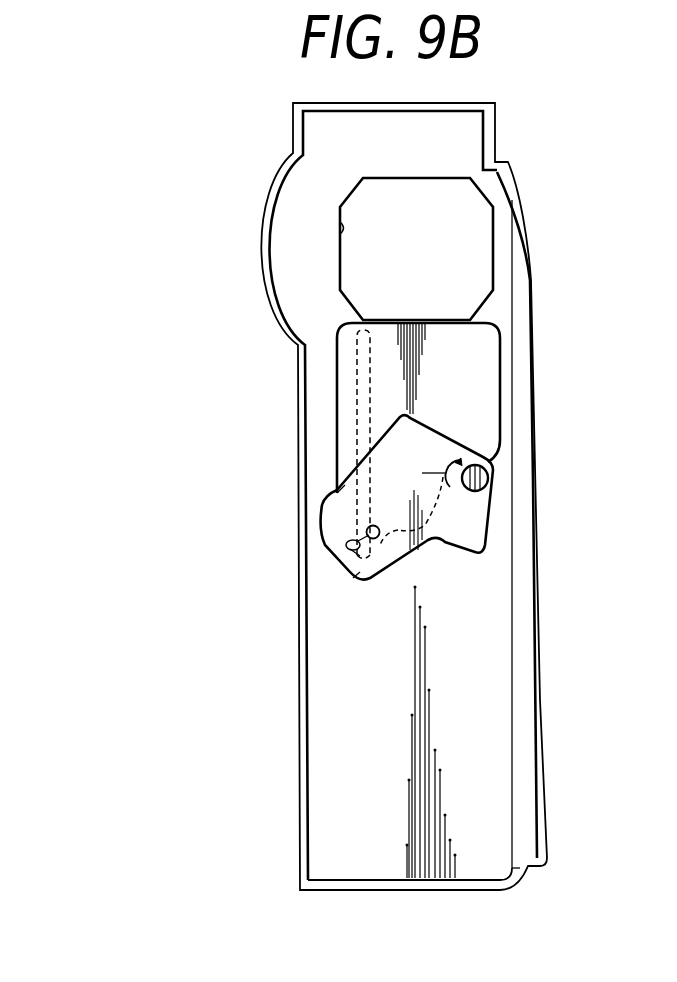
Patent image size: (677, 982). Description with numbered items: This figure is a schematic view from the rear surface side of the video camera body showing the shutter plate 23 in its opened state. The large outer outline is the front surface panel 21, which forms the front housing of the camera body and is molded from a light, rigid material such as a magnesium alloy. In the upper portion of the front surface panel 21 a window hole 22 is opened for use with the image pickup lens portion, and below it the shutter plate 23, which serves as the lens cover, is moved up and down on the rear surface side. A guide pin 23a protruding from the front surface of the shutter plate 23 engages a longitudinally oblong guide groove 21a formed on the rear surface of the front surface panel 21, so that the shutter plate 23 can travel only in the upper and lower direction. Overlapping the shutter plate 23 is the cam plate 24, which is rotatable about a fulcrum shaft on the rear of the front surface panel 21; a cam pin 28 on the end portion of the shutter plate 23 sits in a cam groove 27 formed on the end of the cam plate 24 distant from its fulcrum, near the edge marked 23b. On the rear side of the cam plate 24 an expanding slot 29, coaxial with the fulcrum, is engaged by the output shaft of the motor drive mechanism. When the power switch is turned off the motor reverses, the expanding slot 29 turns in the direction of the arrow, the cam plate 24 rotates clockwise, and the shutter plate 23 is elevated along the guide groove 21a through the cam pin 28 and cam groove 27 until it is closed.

The front surface panel 21 is at (541, 413).
The guide groove 21a is at (358, 370).
The window hole 22 is at (340, 230).
The shutter plate 23 is at (453, 367).
The guide pin 23a is at (352, 470).
The edge portion 23b is at (353, 578).
The cam plate 24 is at (470, 525).
The cam groove 27 is at (350, 540).
The cam pin 28 is at (405, 565).
The expanding slot 29 is at (488, 478).